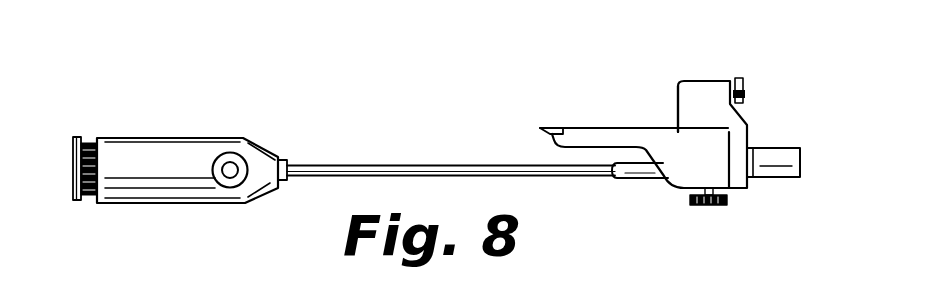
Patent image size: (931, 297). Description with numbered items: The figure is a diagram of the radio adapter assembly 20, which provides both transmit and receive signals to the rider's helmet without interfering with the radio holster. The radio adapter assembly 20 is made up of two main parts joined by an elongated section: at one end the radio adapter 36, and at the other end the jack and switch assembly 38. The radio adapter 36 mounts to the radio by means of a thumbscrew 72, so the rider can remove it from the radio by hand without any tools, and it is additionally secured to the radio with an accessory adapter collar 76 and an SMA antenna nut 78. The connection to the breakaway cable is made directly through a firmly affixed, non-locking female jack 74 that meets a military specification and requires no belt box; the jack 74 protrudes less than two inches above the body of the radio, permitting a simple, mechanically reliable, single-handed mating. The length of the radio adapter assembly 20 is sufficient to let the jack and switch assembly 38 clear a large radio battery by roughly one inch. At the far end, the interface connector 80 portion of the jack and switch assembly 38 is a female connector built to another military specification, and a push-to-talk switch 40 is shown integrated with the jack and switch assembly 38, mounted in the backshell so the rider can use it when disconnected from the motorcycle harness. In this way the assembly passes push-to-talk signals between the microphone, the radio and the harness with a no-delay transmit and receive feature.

The radio adapter assembly 20 is at (376, 151).
The radio adapter 36 is at (678, 61).
The jack and switch assembly 38 is at (189, 119).
The push-to-talk switch 40 is at (217, 186).
The thumbscrew 72 is at (708, 206).
The female jack 74 is at (789, 148).
The accessory adapter collar 76 is at (677, 104).
The SMA antenna nut 78 is at (745, 97).
The interface connector 80 is at (78, 200).